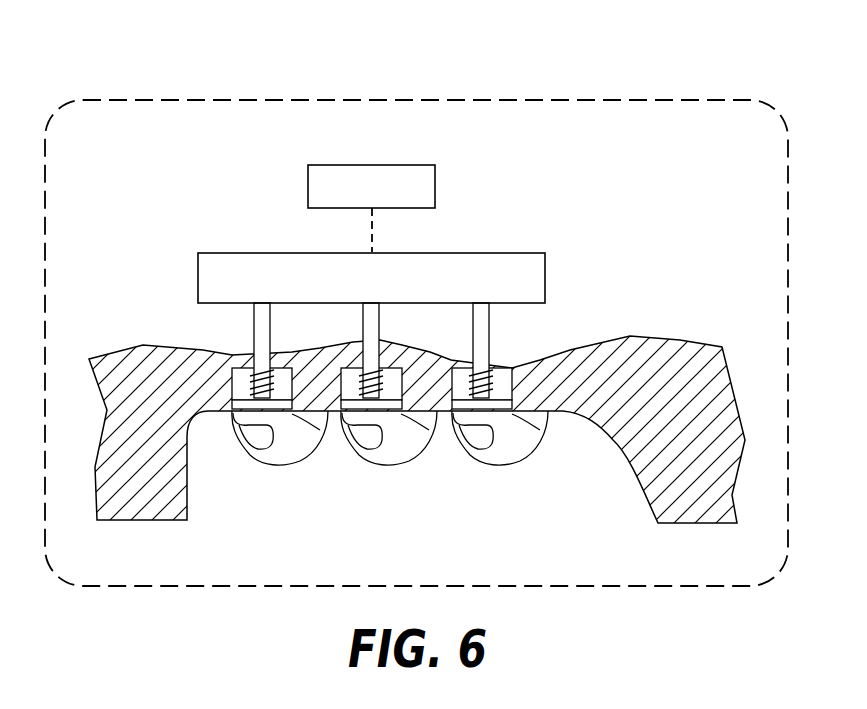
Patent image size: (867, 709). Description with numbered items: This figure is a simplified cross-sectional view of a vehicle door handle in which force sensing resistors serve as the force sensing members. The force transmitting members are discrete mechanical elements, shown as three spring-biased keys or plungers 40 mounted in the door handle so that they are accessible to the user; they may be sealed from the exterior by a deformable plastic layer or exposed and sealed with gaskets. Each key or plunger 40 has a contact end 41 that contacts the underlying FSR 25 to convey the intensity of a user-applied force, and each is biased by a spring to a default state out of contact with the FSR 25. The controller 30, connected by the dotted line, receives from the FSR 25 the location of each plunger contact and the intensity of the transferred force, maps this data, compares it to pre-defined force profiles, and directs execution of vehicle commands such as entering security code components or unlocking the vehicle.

The FSR 25 is at (505, 253).
The controller 30 is at (408, 165).
The key or plunger 40 is at (277, 407).
The contact end 41 is at (262, 304).